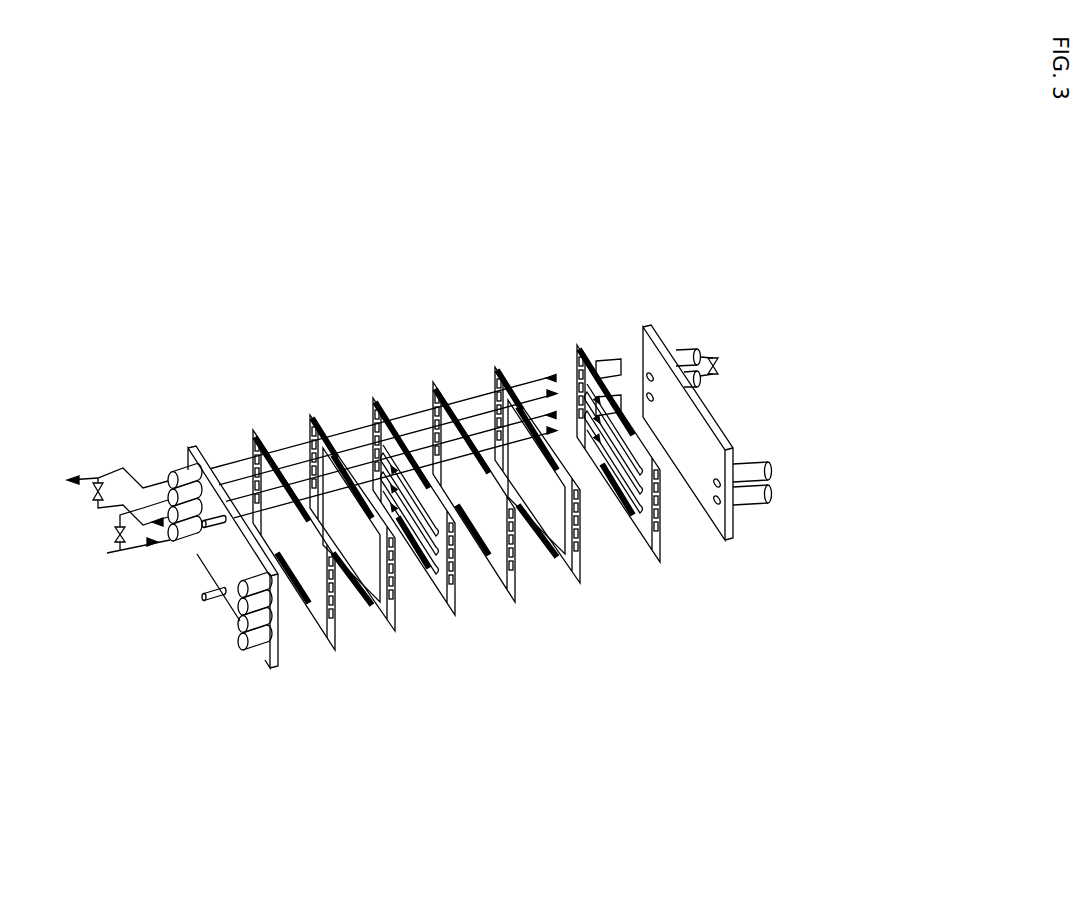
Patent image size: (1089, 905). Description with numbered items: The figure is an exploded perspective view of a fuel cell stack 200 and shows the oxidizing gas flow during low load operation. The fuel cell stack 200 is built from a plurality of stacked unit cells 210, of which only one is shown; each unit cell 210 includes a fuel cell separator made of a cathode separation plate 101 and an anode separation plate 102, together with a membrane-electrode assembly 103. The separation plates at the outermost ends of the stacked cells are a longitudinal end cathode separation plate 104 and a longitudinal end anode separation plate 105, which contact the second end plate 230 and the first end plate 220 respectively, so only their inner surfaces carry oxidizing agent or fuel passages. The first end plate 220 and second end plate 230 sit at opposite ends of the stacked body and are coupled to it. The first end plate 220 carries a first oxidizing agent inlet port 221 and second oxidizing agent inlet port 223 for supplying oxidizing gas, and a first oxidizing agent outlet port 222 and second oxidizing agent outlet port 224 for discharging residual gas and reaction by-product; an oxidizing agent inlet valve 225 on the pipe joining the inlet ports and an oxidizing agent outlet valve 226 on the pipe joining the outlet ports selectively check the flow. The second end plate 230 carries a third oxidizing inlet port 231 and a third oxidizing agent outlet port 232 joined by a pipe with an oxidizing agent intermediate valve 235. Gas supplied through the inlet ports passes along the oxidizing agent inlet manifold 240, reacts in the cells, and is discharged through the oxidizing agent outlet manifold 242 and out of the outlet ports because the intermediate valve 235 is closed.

The fuel cell stack 200 is at (433, 290).
The unit cell 210 is at (487, 319).
The cathode separation plate 101 is at (373, 398).
The anode separation plate 102 is at (433, 382).
The membrane-electrode assembly 103 is at (310, 415).
The longitudinal end cathode separation plate 104 is at (577, 345).
The longitudinal end anode separation plate 105 is at (253, 430).
The first end plate 220 is at (190, 447).
The first oxidizing agent inlet port 221 is at (172, 545).
The first oxidizing agent outlet port 222 is at (168, 527).
The second oxidizing agent inlet port 223 is at (168, 496).
The second oxidizing agent outlet port 224 is at (168, 478).
The oxidizing agent inlet valve 225 is at (115, 538).
The oxidizing agent outlet valve 226 is at (93, 499).
The second end plate 230 is at (645, 326).
The third oxidizing inlet port 231 is at (682, 353).
The third oxidizing agent outlet port 232 is at (700, 386).
The oxidizing agent intermediate valve 235 is at (716, 376).
The oxidizing agent inlet manifold 240 is at (367, 477).
The oxidizing agent outlet manifold 242 is at (545, 412).